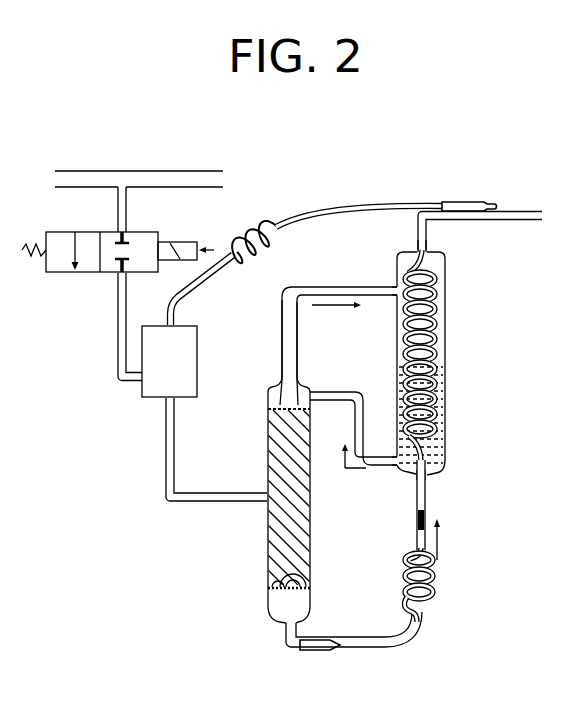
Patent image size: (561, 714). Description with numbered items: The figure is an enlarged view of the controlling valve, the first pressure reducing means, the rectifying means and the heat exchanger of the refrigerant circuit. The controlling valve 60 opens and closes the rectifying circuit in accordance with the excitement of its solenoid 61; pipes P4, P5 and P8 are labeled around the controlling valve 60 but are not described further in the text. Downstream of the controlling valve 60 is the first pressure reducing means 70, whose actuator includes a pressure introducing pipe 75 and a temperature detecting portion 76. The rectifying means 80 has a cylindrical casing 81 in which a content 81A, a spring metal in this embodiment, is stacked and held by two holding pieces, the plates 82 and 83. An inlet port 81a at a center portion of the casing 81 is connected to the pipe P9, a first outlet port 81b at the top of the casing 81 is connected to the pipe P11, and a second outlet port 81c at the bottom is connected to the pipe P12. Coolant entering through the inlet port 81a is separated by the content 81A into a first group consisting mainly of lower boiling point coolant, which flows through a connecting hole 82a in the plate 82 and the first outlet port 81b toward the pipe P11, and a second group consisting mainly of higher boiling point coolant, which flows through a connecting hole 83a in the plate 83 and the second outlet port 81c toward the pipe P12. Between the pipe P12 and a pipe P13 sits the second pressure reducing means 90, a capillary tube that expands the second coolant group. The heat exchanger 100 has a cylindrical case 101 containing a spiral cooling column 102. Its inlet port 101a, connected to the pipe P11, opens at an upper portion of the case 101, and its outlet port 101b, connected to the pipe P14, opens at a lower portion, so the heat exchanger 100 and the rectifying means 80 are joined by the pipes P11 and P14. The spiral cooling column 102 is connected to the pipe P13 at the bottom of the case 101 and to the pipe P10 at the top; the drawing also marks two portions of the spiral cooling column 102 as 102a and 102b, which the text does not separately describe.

The pressure line P4 is at (87, 170).
The pressure line P5 is at (175, 170).
The pressure line P8 is at (117, 348).
The pipe P9 is at (175, 448).
The pipe P10 is at (533, 221).
The pipe P11 is at (303, 287).
The pipe P12 is at (335, 652).
The pipe P13 is at (427, 498).
The pipe P14 is at (362, 403).
The controlling valve 60 is at (63, 272).
The solenoid 61 is at (180, 242).
The first pressure reducing means 70 is at (143, 398).
The pressure introducing pipe 75 is at (287, 222).
The temperature detecting portion 76 is at (465, 201).
The rectifying means 80 is at (285, 495).
The cylindrical casing 81 is at (312, 525).
The content 81A is at (287, 532).
The inlet port 81a is at (267, 490).
The first outlet port 81b is at (302, 381).
The second outlet port 81c is at (282, 619).
The holding piece 82 is at (280, 382).
The connecting hole 82a is at (272, 407).
The holding piece 83 is at (313, 590).
The connecting hole 83a is at (312, 578).
The second pressure reducing means 90 is at (436, 579).
The heat exchanger 100 is at (433, 365).
The cylindrical case 101 is at (447, 274).
The inlet port 101a is at (392, 286).
The outlet port 101b is at (400, 466).
The spiral cooling column 102 is at (430, 367).
The coil outlet 102a is at (430, 476).
The coil inlet 102b is at (422, 242).